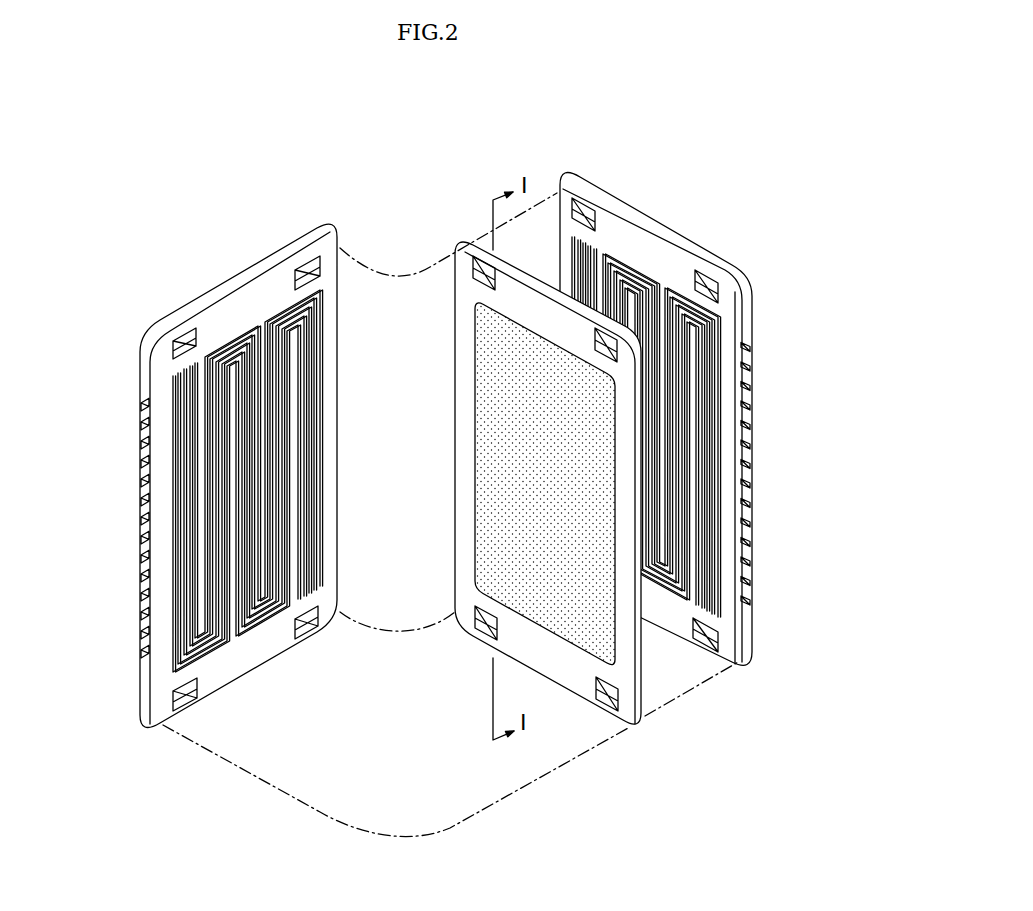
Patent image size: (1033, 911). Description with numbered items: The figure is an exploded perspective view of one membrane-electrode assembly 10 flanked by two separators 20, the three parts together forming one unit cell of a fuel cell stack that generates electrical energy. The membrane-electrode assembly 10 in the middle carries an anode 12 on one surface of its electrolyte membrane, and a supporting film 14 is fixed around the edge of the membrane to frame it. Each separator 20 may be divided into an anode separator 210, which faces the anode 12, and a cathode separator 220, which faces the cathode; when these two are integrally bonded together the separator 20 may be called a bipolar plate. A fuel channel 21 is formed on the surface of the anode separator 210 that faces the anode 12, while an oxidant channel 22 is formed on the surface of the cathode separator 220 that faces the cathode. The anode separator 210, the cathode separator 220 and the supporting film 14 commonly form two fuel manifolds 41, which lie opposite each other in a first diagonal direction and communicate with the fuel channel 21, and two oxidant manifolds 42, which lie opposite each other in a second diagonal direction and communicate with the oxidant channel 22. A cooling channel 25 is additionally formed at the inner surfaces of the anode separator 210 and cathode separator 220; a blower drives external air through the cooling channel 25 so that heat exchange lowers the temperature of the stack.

The membrane-electrode assembly 10 is at (538, 516).
The anode 12 is at (486, 512).
The supporting film 14 is at (462, 553).
The separator 20 is at (450, 450).
The fuel channel 21 is at (318, 453).
The oxidant channel 22 is at (715, 440).
The cooling channel 25 is at (145, 530).
The fuel manifold 41 is at (184, 338).
The oxidant manifold 42 is at (305, 272).
The anode separator 210 is at (149, 391).
The cathode separator 220 is at (139, 352).